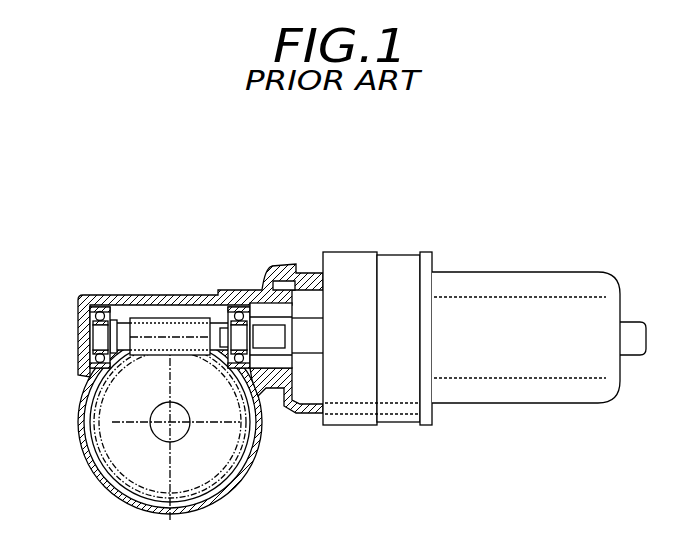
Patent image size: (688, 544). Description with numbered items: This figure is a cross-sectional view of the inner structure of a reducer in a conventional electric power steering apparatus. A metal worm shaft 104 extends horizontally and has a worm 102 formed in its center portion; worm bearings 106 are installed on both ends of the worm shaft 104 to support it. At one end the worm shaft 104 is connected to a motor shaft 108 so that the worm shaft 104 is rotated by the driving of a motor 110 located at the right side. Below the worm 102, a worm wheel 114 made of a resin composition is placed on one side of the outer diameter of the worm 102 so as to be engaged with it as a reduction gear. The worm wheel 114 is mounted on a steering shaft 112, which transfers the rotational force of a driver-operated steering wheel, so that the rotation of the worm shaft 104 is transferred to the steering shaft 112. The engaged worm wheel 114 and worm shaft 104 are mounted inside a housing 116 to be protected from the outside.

The worm 102 is at (156, 318).
The worm shaft 104 is at (122, 322).
The worm bearings 106 is at (103, 306).
The motor shaft 108 is at (313, 324).
The motor 110 is at (457, 281).
The steering shaft 112 is at (187, 437).
The worm wheel 114 is at (260, 437).
The housing 116 is at (80, 347).